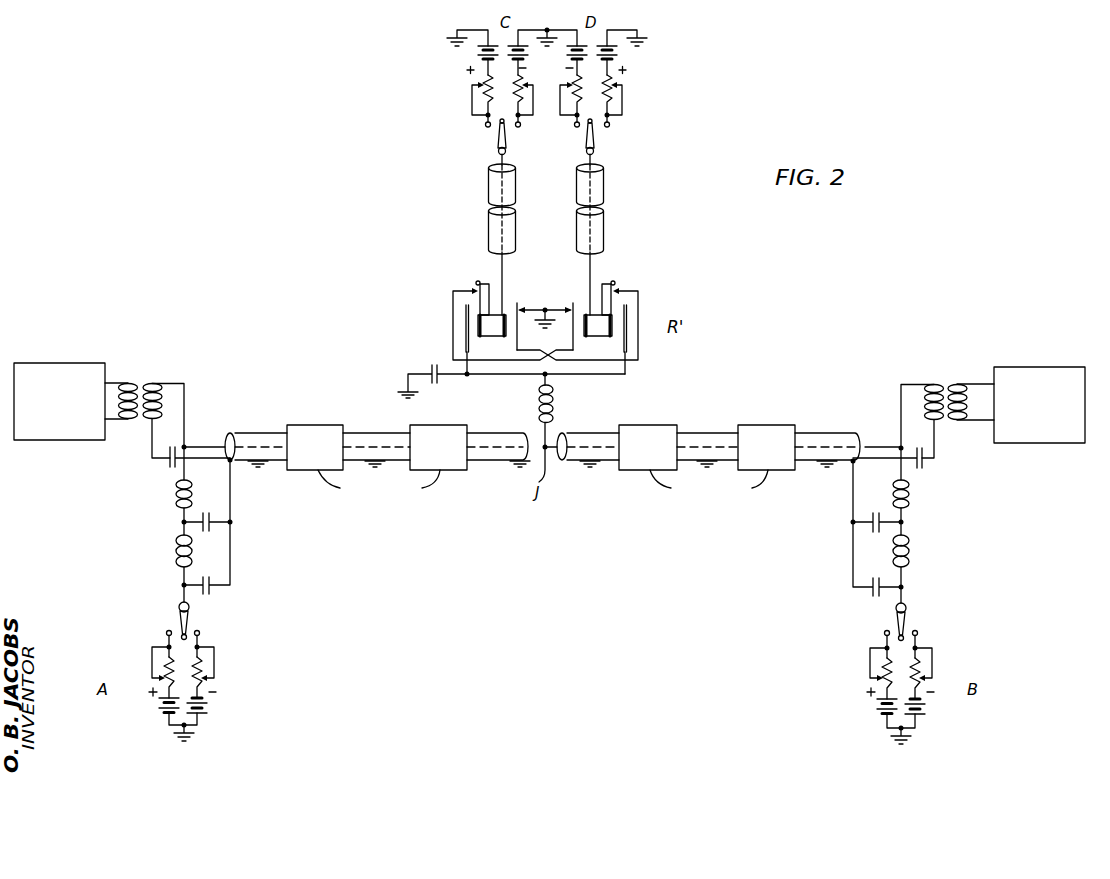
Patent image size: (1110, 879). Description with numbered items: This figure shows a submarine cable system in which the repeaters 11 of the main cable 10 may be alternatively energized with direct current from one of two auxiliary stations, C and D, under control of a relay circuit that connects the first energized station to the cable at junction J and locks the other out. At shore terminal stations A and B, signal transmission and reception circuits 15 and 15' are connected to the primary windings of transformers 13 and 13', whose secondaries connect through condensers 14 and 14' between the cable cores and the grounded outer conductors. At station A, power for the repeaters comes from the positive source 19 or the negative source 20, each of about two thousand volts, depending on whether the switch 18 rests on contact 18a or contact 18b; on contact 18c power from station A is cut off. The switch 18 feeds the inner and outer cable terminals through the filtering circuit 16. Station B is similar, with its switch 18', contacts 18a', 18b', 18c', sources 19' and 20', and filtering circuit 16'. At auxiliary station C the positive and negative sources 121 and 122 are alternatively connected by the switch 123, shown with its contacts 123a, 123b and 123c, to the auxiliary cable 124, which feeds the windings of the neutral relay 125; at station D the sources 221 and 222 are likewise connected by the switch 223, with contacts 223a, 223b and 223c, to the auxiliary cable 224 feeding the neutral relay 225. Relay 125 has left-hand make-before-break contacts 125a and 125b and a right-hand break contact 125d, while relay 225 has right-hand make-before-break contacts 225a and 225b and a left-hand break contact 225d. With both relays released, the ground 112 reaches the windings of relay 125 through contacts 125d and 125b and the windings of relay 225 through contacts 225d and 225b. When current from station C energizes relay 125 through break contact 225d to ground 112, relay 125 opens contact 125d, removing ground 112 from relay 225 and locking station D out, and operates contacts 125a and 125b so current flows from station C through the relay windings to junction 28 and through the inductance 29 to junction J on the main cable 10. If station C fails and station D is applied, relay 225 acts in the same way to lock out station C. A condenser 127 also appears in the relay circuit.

The main cable 10 is at (257, 432).
The repeaters 11 is at (445, 425).
The transformer 13 is at (146, 417).
The condenser 14 is at (183, 467).
The signal transmission and reception circuits 15 is at (59, 386).
The filtering circuit 16 is at (188, 531).
The switch 18 is at (205, 618).
The contact 18a is at (147, 655).
The contact 18b is at (223, 656).
The contact 18c is at (165, 624).
The positive source 19 is at (160, 699).
The negative source 20 is at (213, 691).
The transformer 13' is at (947, 418).
The condenser 14' is at (904, 469).
The signal transmission and reception circuits 15' is at (1039, 389).
The filtering circuit 16' is at (899, 531).
The switch 18' is at (920, 613).
The contact 18a' is at (863, 656).
The contact 18b' is at (938, 652).
The contact 18c' is at (880, 624).
The positive source 19' is at (875, 701).
The negative source 20' is at (932, 693).
The junction 28 is at (543, 377).
The inductance 29 is at (554, 403).
The ground 112 is at (536, 327).
The positive source of potential 121 is at (477, 57).
The negative source of potential 122 is at (526, 53).
The switch 123 is at (507, 138).
The relay contact 123a is at (485, 125).
The relay contact 123b is at (521, 125).
The relay armature tip 123c is at (499, 127).
The auxiliary cable 124 is at (489, 212).
The neutral relay 125 is at (494, 337).
The make-before-break contact 125a is at (478, 308).
The make-before-break contact 125b is at (477, 281).
The break contact 125d is at (524, 306).
The capacitor 127 is at (431, 365).
The positive source of potential 221 is at (621, 55).
The negative source of potential 222 is at (574, 86).
The switch 223 is at (594, 138).
The relay contact 223a is at (610, 125).
The relay contact 223b is at (583, 127).
The relay armature tip 223c is at (595, 128).
The auxiliary cable 224 is at (603, 212).
The neutral relay 225 is at (600, 337).
The make-before-break contact 225a is at (613, 308).
The make-before-break contact 225b is at (614, 281).
The break contact 225d is at (566, 306).